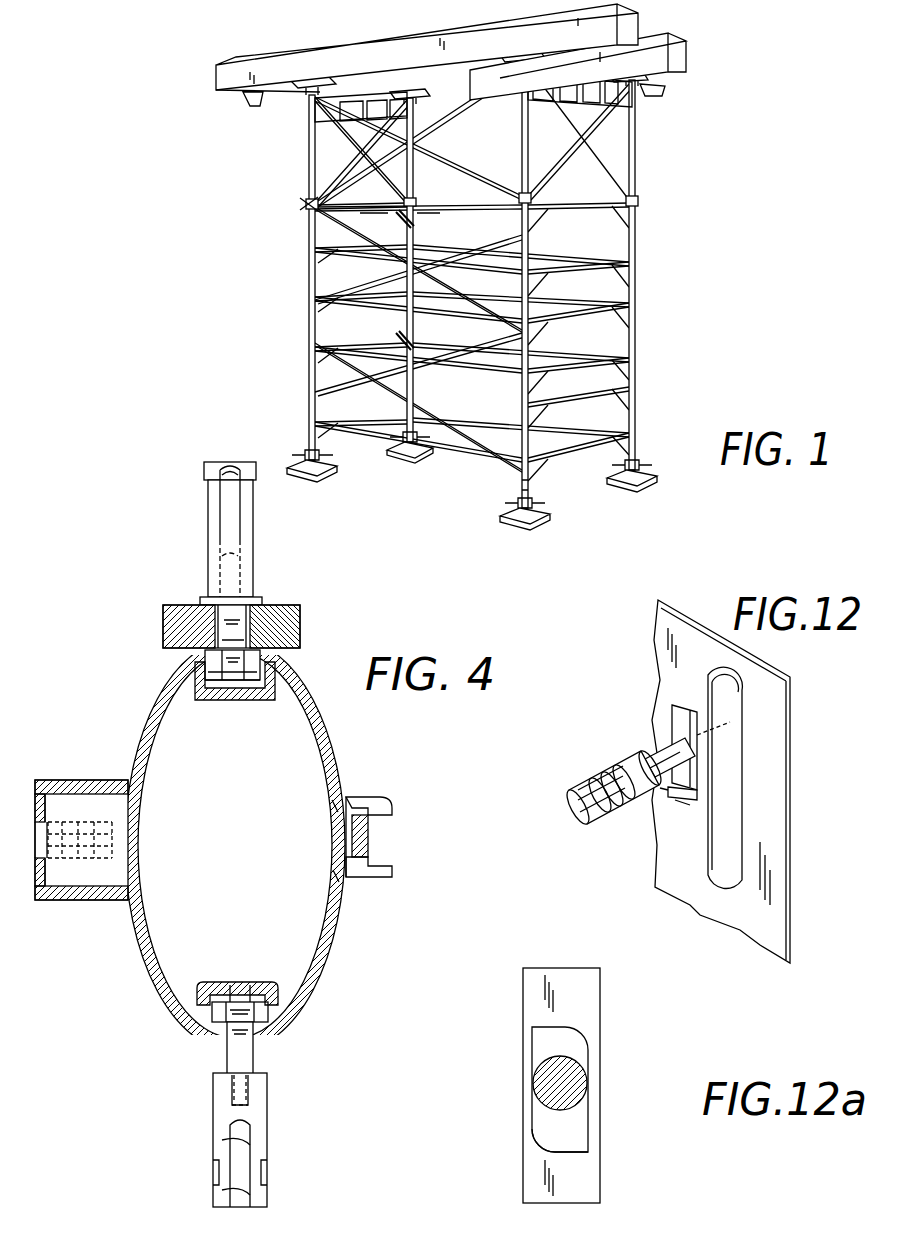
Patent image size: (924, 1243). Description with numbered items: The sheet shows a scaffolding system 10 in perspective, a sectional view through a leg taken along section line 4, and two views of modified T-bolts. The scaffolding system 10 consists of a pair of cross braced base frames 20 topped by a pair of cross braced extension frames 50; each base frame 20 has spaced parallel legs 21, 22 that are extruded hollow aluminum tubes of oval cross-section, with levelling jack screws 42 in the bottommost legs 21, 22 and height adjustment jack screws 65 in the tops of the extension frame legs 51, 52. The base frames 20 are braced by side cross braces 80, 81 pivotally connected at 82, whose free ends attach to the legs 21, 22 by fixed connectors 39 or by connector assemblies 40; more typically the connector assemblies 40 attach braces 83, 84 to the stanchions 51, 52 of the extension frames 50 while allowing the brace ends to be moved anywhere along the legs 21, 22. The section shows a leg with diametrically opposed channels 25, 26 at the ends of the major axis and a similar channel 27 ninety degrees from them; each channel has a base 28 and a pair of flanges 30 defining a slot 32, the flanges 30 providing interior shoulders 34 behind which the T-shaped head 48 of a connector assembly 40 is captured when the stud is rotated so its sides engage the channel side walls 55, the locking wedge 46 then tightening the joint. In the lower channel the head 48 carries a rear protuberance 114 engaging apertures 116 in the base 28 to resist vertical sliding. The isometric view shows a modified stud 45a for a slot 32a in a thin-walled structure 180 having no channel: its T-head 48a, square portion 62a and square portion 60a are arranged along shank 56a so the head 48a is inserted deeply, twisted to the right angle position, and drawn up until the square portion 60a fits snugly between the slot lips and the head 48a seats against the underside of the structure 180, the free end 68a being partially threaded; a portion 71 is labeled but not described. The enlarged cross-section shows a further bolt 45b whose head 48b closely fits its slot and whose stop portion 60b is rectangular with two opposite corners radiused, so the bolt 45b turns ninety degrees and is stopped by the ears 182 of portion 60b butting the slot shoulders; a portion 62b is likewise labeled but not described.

In FIG. 1, the scaffolding system 10 is at (742, 277).
In FIG. 1, the base frame 20 is at (306, 332).
In FIG. 1, the leg 21 is at (520, 488).
In FIG. 4, the leg 21 is at (342, 752).
In FIG. 1, the leg 22 is at (640, 449).
In FIG. 4, the channel 25 is at (262, 690).
In FIG. 4, the channel 26 is at (267, 980).
In FIG. 4, the channel 27 is at (366, 797).
In FIG. 4, the base 28 is at (343, 877).
In FIG. 4, the flange 30 is at (395, 807).
In FIG. 4, the slot 32 is at (390, 837).
In FIG. 4, the interior shoulder 34 is at (370, 853).
In FIG. 1, the fixed connector 39 is at (408, 229).
In FIG. 4, the fixed connector 39 is at (92, 868).
In FIG. 1, the connector assembly 40 is at (304, 204).
In FIG. 4, the connector assembly 40 is at (316, 617).
In FIG. 1, the levelling jack screw 42 is at (552, 527).
In FIG. 4, the locking wedge 46 is at (273, 597).
In FIG. 4, the T-shaped head 48 is at (262, 667).
In FIG. 1, the extension frame 50 is at (308, 162).
In FIG. 1, the extension frame leg 51 is at (639, 176).
In FIG. 1, the extension frame leg 52 is at (514, 185).
In FIG. 4, the side wall 55 is at (222, 690).
In FIG. 1, the height adjustment jack screw 65 is at (296, 92).
In FIG. 1, the side cross brace 80 is at (353, 430).
In FIG. 1, the side cross brace 81 is at (485, 455).
In FIG. 1, the pivotal connection 82 is at (416, 400).
In FIG. 1, the brace 83 is at (362, 166).
In FIG. 1, the brace 84 is at (470, 188).
In FIG. 4, the rear protuberance 114 is at (243, 980).
In FIG. 4, the aperture 116 is at (230, 978).
In FIG. 1, the section line 4 is at (375, 210).
In FIG. 12, the slot 32a is at (723, 764).
In FIG. 12, the modified stud 45a is at (622, 852).
In FIG. 12, the T-head 48a is at (677, 789).
In FIG. 12, the shank 56a is at (678, 808).
In FIG. 12, the square portion 60a is at (673, 705).
In FIG. 12, the shank square portion 62a is at (665, 753).
In FIG. 12, the free end 68a is at (595, 783).
In FIG. 12, the shoulder 71 is at (650, 813).
In FIG. 12, the structure 180 is at (773, 720).
In FIG. 12a, the bolt 45b is at (623, 1017).
In FIG. 12a, the head 48b is at (575, 1172).
In FIG. 12a, the stop portion 60b is at (582, 1039).
In FIG. 12a, the shaft 62b is at (575, 1087).
In FIG. 12a, the ear 182 is at (573, 1145).